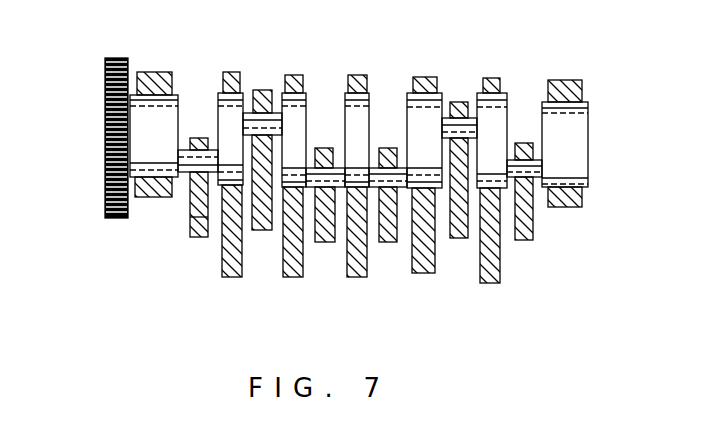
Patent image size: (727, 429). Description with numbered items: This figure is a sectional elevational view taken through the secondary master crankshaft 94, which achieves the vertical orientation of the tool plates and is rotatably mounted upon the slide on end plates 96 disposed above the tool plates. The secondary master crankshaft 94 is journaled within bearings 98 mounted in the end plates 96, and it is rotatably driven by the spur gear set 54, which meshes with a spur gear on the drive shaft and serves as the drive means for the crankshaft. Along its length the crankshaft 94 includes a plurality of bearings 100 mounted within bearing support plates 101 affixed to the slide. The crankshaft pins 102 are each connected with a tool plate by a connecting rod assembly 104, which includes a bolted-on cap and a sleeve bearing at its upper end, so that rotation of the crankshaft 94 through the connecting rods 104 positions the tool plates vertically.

The spur gear set 54 is at (106, 98).
The secondary master crankshaft 94 is at (365, 127).
The end plates 96 is at (170, 50).
The bearings 98 is at (584, 195).
The bearings 100 is at (170, 144).
The bearing support plates 101 is at (297, 280).
The crankshaft pins 102 is at (192, 172).
The connecting rod assembly 104 is at (398, 260).